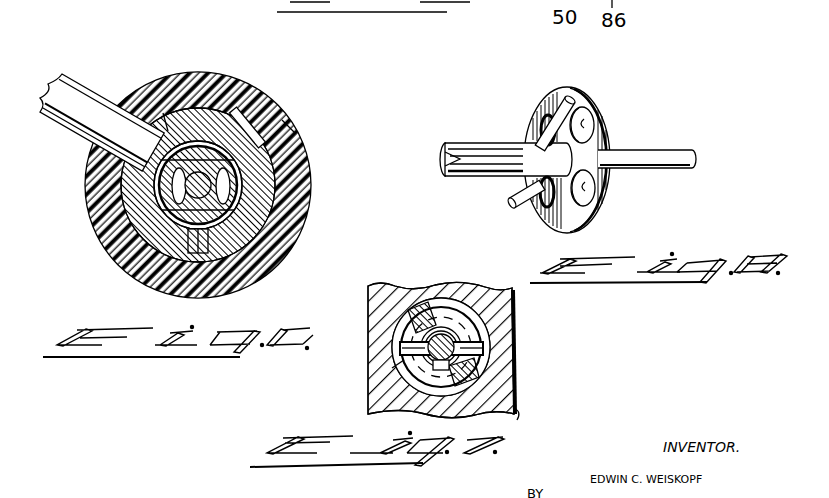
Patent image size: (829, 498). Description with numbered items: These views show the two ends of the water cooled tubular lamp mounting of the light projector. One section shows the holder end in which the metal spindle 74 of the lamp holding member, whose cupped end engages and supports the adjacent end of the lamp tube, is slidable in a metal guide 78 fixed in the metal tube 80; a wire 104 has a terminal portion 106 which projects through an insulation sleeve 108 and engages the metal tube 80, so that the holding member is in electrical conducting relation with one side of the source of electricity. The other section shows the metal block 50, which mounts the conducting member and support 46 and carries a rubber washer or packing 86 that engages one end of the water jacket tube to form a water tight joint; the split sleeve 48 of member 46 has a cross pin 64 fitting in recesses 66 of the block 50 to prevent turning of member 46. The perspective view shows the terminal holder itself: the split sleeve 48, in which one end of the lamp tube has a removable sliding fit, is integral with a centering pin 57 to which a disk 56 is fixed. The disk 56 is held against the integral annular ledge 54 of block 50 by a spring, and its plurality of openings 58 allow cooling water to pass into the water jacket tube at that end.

In FIG. 8, the conducting member and support 46 is at (515, 108).
In FIG. 8, the split sleeve 48 is at (487, 143).
In FIG. 7, the metal block 50 is at (518, 320).
In FIG. 7, the annular ledge 54 is at (415, 317).
In FIG. 8, the disk 56 is at (600, 105).
In FIG. 7, the disk 56 is at (444, 333).
In FIG. 8, the centering pin 57 is at (671, 150).
In FIG. 8, the openings 58 is at (586, 128).
In FIG. 7, the openings 58 is at (360, 409).
In FIG. 8, the cross pin 64 is at (515, 204).
In FIG. 7, the cross pin 64 is at (468, 347).
In FIG. 7, the recesses 66 is at (400, 348).
In FIG. 6, the metal spindle 74 is at (237, 109).
In FIG. 6, the metal guide 78 is at (160, 227).
In FIG. 6, the metal tube 80 is at (209, 96).
In FIG. 7, the rubber washer or packing 86 is at (393, 372).
In FIG. 6, the electric wire 104 is at (63, 72).
In FIG. 6, the terminal portion 106 is at (162, 112).
In FIG. 6, the insulation sleeve 108 is at (290, 126).